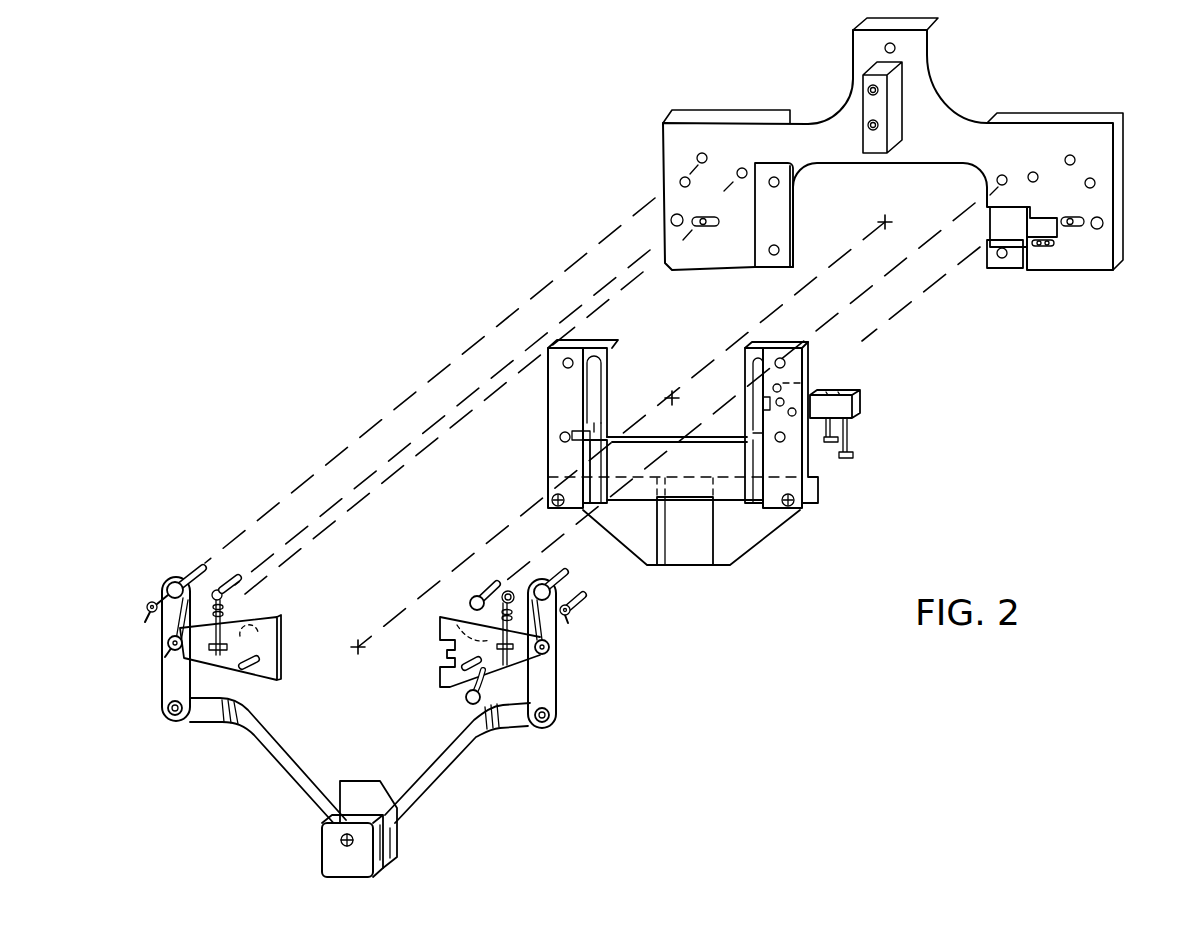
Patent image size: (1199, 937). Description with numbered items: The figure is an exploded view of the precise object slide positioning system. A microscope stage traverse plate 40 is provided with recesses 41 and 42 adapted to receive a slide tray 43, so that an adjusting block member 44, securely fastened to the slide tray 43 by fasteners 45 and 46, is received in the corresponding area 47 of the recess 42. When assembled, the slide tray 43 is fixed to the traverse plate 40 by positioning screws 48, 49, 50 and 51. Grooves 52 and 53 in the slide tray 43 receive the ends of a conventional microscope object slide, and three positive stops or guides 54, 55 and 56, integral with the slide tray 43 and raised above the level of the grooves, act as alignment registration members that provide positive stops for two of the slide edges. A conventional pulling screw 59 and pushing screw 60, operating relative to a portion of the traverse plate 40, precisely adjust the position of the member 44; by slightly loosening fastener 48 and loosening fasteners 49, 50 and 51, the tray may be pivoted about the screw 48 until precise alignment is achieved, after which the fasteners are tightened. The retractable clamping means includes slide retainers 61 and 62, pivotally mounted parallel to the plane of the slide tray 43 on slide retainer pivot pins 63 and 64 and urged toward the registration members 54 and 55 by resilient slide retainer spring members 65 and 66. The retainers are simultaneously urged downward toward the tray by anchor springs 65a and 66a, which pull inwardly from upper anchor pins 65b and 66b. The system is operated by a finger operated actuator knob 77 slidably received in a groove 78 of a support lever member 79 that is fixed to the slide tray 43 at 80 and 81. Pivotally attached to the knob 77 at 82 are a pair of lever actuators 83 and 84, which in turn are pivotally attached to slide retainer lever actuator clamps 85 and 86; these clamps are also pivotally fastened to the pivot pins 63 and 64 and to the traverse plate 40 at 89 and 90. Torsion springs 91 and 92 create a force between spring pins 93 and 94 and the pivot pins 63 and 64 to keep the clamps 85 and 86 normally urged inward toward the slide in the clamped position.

The microscope stage traverse plate 40 is at (1120, 158).
The recess 41 is at (780, 230).
The recess 42 is at (1013, 259).
The slide tray 43 is at (578, 345).
The adjusting block member 44 is at (845, 400).
The fastener 45 is at (777, 388).
The fastener 46 is at (792, 415).
The corresponding area of recess 47 is at (1000, 222).
The positioning screw 48 is at (560, 373).
The positioning screw 49 is at (560, 440).
The positioning screw 50 is at (780, 444).
The positioning screw 51 is at (782, 352).
The groove 52 is at (612, 430).
The groove 53 is at (760, 400).
The positive stop or guide 54 is at (612, 355).
The positive stop or guide 55 is at (752, 370).
The positive stop or guide 56 is at (603, 402).
The pulling screw 59 is at (840, 430).
The pushing screw 60 is at (858, 435).
The slide retainer 61 is at (280, 645).
The slide retainer 62 is at (442, 620).
The slide retainer pivot pin 63 is at (190, 647).
The slide retainer pivot pin 64 is at (548, 653).
The slide retainer spring member 65 is at (222, 605).
The anchor spring 65a is at (282, 620).
The upper anchor pin 65b is at (225, 670).
The slide retainer spring member 66 is at (506, 590).
The anchor spring 66a is at (452, 620).
The upper anchor pin 66b is at (493, 580).
The actuator knob 77 is at (388, 870).
The groove 78 is at (690, 540).
The support lever member 79 is at (735, 525).
The fixing point 80 is at (165, 718).
The fixing point 81 is at (550, 725).
The pivotal attachment 82 is at (343, 845).
The lever actuator 83 is at (255, 732).
The lever actuator 84 is at (465, 745).
The slide retainer lever actuator clamp 85 is at (170, 685).
The slide retainer lever actuator clamp 86 is at (545, 690).
The pivotal attachment to traverse plate 89 is at (178, 582).
The pivotal attachment to traverse plate 90 is at (545, 583).
The torsion spring 91 is at (165, 640).
The torsion spring 92 is at (553, 642).
The spring pin 93 is at (152, 605).
The spring pin 94 is at (575, 602).